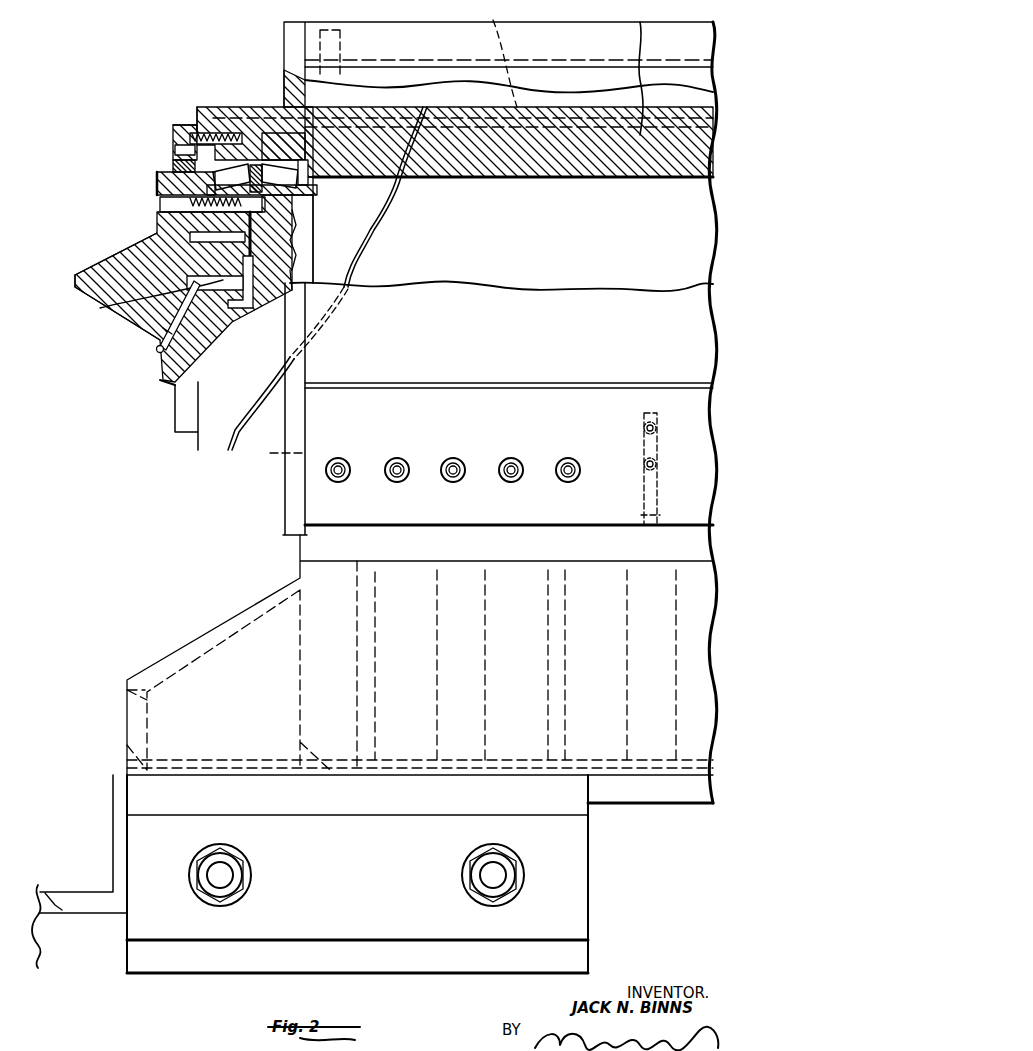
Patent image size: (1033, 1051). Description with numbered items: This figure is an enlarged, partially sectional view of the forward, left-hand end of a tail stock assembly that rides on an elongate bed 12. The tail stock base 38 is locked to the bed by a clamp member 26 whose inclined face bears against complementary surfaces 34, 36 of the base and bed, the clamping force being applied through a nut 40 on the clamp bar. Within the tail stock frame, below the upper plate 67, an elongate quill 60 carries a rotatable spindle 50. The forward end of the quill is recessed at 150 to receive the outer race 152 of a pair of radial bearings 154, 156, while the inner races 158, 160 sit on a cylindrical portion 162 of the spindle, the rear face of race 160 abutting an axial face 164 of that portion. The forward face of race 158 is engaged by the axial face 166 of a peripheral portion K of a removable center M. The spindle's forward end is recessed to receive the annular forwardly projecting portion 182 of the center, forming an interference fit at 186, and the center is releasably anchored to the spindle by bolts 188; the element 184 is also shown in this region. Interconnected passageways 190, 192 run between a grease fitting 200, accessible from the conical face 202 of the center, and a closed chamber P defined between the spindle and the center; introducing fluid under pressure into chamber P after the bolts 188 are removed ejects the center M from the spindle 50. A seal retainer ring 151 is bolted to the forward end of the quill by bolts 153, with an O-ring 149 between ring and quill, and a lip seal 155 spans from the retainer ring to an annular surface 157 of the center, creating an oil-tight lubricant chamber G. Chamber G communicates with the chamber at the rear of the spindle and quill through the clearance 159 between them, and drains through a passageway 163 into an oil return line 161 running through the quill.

The bed 12 is at (40, 893).
The clamp member 26 is at (577, 877).
The complementary surface 34 is at (667, 793).
The complementary surface 36 is at (82, 897).
The tail stock base 38 is at (268, 606).
The nut 40 is at (252, 873).
The spindle 50 is at (551, 272).
The quill 60 is at (673, 403).
The upper plate 67 is at (560, 34).
The O-ring 149 is at (180, 152).
The recess 150 is at (265, 150).
The seal retainer ring 151 is at (182, 413).
The outer race 152 is at (276, 152).
The bolt 153 is at (180, 132).
The radial bearing 154 is at (233, 168).
The lip seal 155 is at (180, 163).
The radial bearing 156 is at (290, 170).
The annular surface 157 is at (167, 383).
The inner race 158 is at (170, 178).
The clearance 159 is at (537, 178).
The inner race 160 is at (320, 186).
The oil return line 161 is at (491, 18).
The cylindrical portion 162 is at (293, 223).
The passageway 163 is at (207, 105).
The axial face 164 is at (310, 212).
The axial face 166 is at (180, 205).
The forwardly projecting portion 182 is at (293, 237).
The block 184 is at (293, 258).
The interference fit 186 is at (160, 234).
The bolt 188 is at (180, 218).
The passageway 190 is at (127, 300).
The passageway 192 is at (148, 328).
The grease fitting 200 is at (157, 349).
The conical face 202 is at (137, 317).
The lubricant chamber G is at (197, 125).
The peripheral portion K is at (173, 188).
The center M is at (80, 276).
The closed chamber P is at (262, 280).